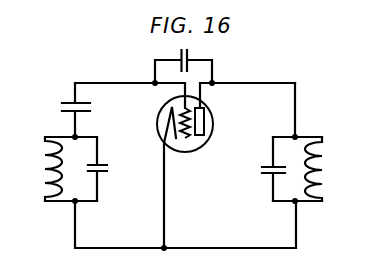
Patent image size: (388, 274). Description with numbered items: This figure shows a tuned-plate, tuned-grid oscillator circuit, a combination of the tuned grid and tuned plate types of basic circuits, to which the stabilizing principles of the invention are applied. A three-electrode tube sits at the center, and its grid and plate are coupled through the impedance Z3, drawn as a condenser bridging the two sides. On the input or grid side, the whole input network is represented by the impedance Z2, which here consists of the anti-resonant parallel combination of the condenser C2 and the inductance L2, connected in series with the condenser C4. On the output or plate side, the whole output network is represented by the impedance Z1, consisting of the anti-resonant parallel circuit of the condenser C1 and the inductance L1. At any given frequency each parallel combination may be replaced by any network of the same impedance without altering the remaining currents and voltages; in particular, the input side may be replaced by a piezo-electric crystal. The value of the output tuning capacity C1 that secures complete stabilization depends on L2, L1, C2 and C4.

The coupling impedance Z3 is at (184, 62).
The series condenser C4 is at (62, 103).
The input network impedance Z2 is at (75, 169).
The input inductance L2 is at (41, 169).
The input condenser C2 is at (109, 169).
The output network impedance Z1 is at (293, 169).
The output tuning condenser C1 is at (264, 169).
The output inductance L1 is at (324, 169).